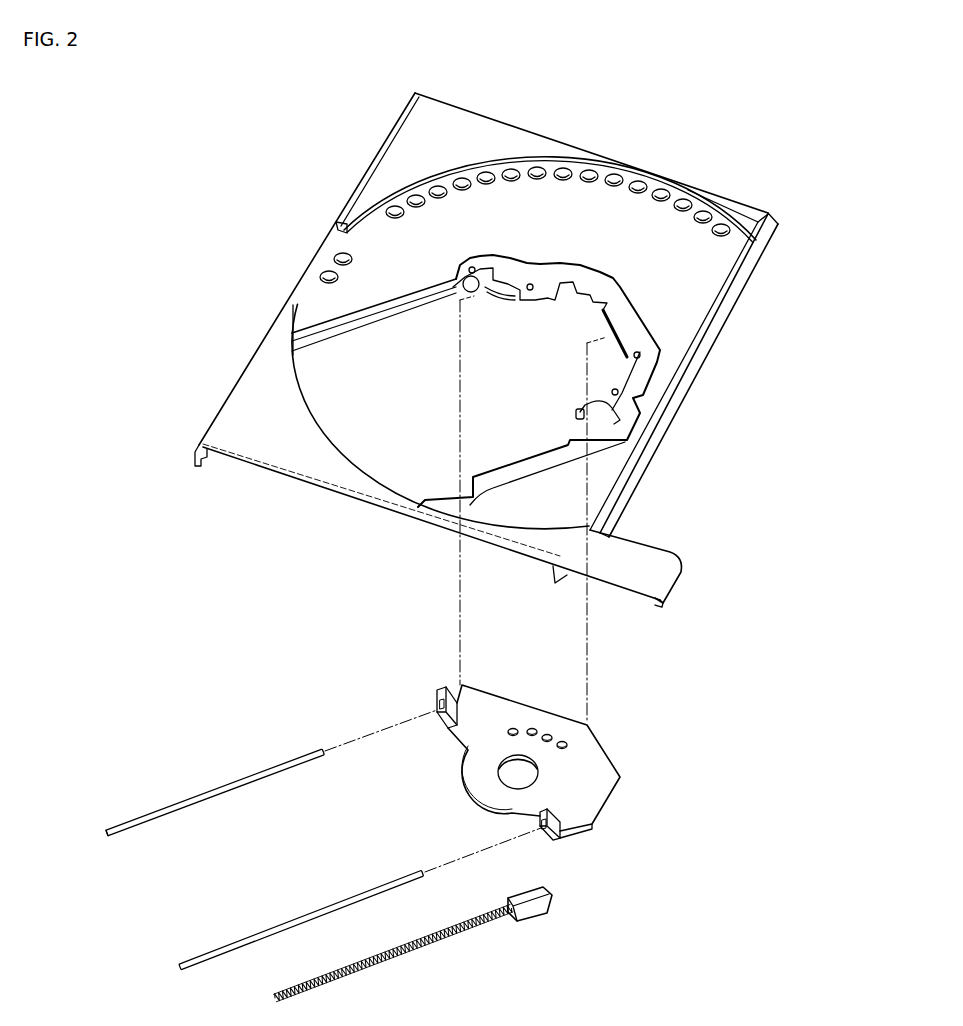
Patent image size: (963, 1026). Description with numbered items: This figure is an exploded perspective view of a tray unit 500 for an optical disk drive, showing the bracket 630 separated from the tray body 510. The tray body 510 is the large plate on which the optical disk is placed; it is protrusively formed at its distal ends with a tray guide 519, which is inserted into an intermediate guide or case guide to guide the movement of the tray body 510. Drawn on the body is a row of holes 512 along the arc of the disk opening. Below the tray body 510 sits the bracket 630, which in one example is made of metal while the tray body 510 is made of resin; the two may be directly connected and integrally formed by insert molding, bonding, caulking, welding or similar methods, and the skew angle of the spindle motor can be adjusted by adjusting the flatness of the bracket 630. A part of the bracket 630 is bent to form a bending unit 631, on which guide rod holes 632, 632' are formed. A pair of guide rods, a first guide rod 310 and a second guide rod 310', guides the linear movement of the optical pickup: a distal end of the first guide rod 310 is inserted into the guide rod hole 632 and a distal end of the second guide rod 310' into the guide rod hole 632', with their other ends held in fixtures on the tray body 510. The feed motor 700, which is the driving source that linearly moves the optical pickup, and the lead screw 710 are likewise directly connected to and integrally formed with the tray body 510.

The tray unit 500 is at (716, 405).
The tray body 510 is at (618, 217).
The holes 512 is at (521, 165).
The tray guide 519 is at (758, 261).
The bracket 630 is at (596, 770).
The bending unit 631 is at (455, 687).
The guide rod hole 632 is at (475, 816).
The guide rod hole 632' is at (383, 692).
The first guide rod 310 is at (355, 899).
The second guide rod 310' is at (260, 773).
The feed motor 700 is at (532, 910).
The lead screw 710 is at (398, 952).